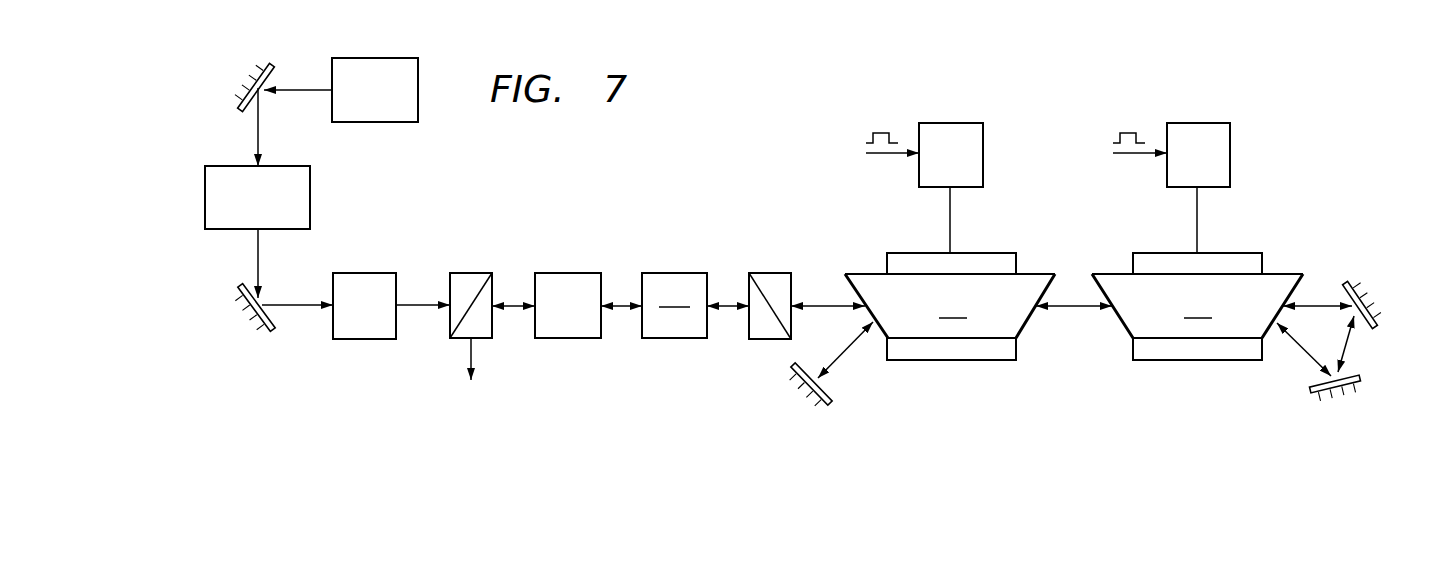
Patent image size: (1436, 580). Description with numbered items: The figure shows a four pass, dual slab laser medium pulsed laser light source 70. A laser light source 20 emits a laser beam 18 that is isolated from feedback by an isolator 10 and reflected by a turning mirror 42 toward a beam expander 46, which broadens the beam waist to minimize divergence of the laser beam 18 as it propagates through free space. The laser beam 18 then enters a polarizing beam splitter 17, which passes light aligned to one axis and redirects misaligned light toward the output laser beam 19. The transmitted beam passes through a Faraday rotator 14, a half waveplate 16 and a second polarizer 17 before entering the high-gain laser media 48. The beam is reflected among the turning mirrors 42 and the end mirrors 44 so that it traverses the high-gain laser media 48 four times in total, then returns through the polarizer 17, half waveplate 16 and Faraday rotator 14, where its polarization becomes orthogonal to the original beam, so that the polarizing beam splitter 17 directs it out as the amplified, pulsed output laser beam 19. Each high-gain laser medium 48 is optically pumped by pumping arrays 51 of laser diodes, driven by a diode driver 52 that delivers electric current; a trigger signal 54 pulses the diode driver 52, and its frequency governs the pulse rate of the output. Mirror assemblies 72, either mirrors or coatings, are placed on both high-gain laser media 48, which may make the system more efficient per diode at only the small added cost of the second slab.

The laser light source 20 is at (370, 58).
The turning mirror 42 is at (248, 74).
The isolator 10 is at (205, 197).
The laser beam 18 is at (254, 247).
The beam expander 46 is at (360, 273).
The polarizing beam splitter 17 is at (465, 273).
The Faraday rotator 14 is at (562, 273).
The half waveplate 16 is at (677, 273).
The output laser beam 19 is at (476, 350).
The high-gain laser media 48 is at (1071, 306).
The pumping arrays 51 is at (985, 258).
The mirror assemblies 72 is at (976, 352).
The diode driver 52 is at (984, 152).
The trigger signal 54 is at (886, 160).
The end mirror 44 is at (795, 398).
The four pass, dual slab laser medium pulsed laser light source 70 is at (1374, 176).